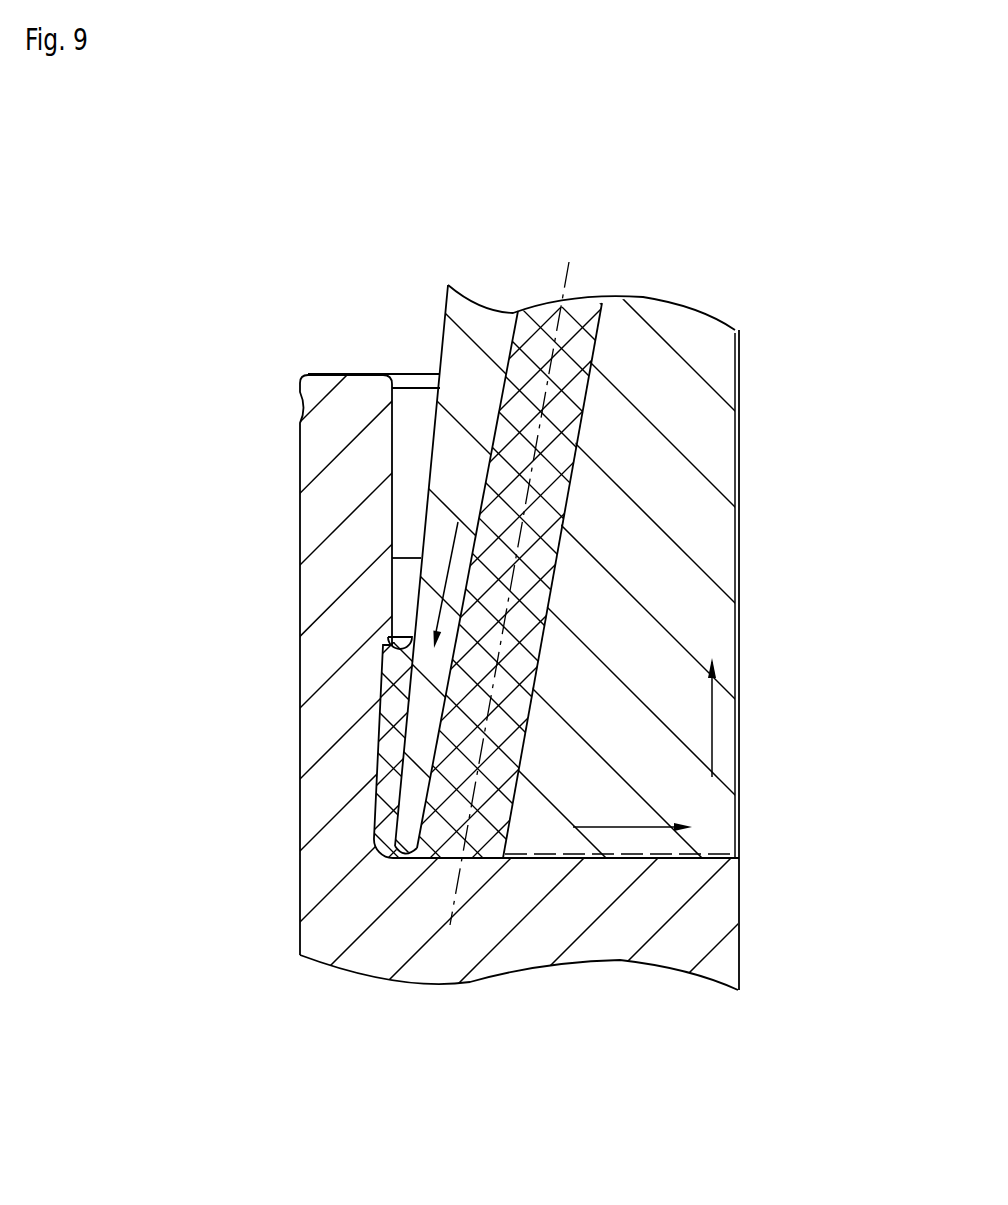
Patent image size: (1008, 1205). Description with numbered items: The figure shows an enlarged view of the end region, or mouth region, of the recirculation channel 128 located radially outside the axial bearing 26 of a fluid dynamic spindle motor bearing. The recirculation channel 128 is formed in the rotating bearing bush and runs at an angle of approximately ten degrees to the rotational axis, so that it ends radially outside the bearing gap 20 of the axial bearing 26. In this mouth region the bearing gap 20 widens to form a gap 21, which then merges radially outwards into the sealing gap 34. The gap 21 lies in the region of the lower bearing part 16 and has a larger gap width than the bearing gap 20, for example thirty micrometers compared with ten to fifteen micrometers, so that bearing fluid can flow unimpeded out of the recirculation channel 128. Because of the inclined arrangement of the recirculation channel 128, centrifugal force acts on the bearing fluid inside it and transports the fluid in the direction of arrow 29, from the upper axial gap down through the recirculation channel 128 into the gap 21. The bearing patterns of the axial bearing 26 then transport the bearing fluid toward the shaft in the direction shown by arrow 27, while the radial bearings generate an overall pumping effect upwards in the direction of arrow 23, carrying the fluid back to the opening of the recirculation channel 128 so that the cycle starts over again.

The lower bearing part 16 is at (337, 852).
The bearing gap 20 is at (615, 858).
The gap 21 is at (430, 863).
The arrow 23 is at (713, 737).
The axial bearing 26 is at (580, 858).
The arrow 27 is at (730, 860).
The arrow 29 is at (452, 552).
The sealing gap 34 is at (397, 593).
The recirculation channel 128 is at (512, 687).